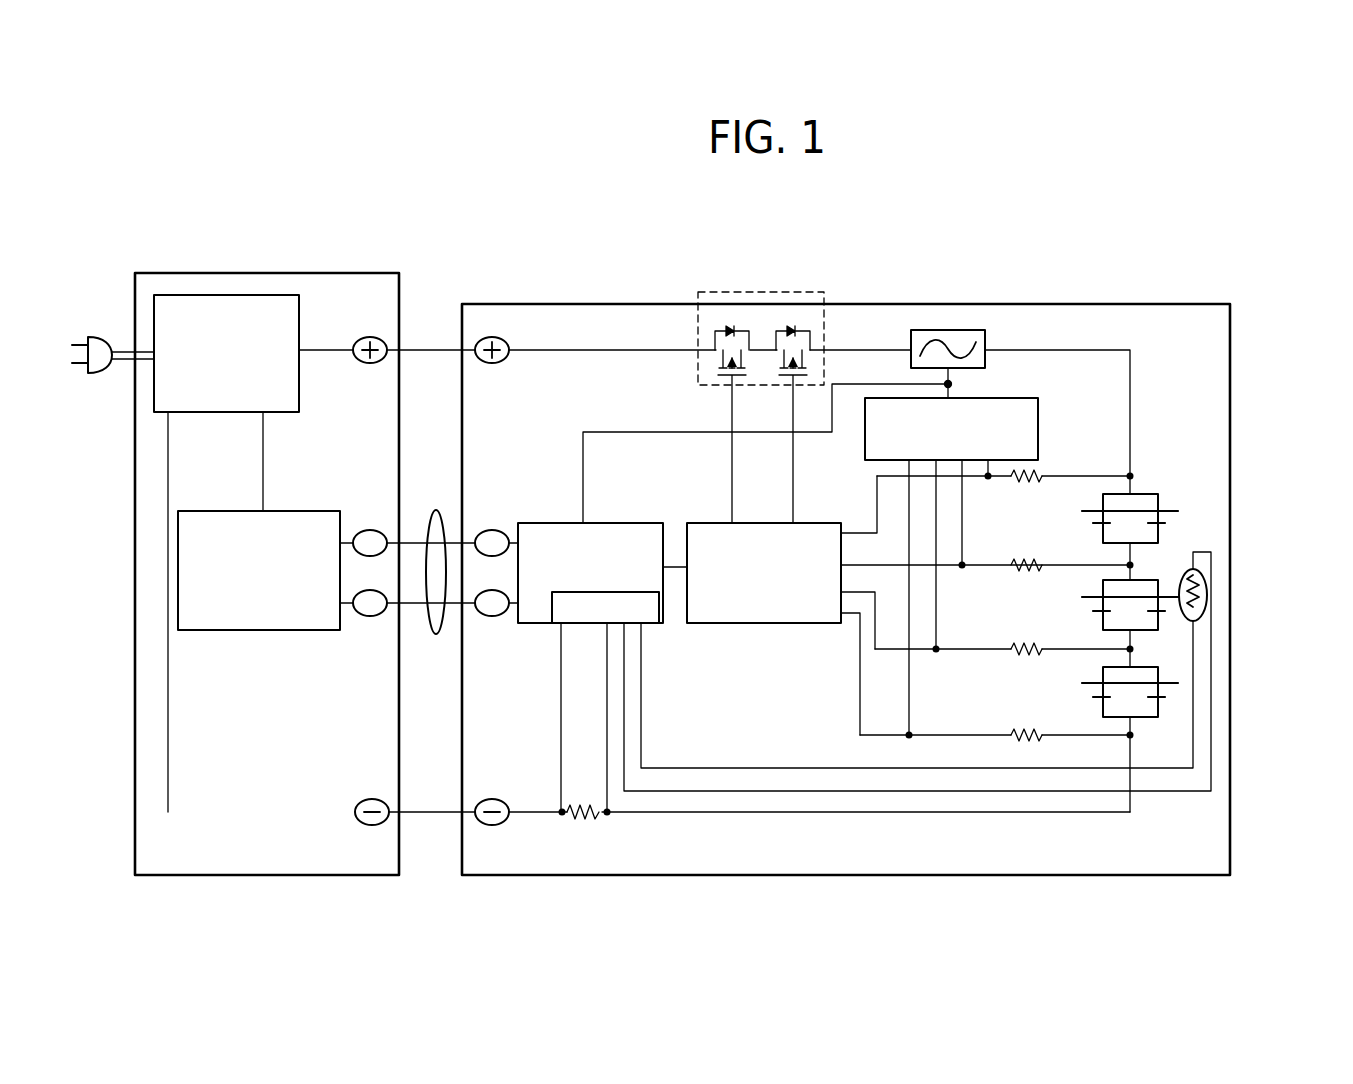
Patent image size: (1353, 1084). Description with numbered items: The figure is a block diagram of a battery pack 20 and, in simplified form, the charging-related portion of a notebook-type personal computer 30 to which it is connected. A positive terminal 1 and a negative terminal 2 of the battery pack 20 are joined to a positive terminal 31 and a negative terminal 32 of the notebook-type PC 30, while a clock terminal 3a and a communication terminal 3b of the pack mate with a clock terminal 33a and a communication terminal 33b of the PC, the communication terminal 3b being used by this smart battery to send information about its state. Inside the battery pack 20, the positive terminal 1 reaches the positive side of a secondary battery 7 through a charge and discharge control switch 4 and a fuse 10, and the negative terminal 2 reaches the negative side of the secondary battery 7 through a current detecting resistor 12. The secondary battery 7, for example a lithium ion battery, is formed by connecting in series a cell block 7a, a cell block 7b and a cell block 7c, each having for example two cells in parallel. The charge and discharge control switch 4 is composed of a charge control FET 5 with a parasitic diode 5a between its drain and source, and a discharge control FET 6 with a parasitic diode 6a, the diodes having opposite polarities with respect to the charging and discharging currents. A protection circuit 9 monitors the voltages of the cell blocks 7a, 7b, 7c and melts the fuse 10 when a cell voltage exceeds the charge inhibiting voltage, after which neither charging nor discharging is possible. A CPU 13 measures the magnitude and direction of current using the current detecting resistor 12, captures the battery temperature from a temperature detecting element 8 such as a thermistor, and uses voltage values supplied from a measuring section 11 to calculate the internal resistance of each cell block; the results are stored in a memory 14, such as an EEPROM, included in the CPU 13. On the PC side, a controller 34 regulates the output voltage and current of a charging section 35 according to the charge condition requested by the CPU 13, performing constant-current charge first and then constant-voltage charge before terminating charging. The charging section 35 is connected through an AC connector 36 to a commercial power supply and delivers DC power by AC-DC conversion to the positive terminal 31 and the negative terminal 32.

The positive terminal 1 is at (492, 365).
The negative terminal 2 is at (488, 799).
The clock terminal 3a is at (493, 530).
The communication terminal 3b is at (496, 617).
The charge and discharge control switch 4 is at (826, 292).
The charge control FET 5 is at (786, 389).
The parasitic diode 5a is at (791, 318).
The discharge control FET 6 is at (724, 389).
The parasitic diode 6a is at (731, 318).
The secondary battery 7 is at (1204, 636).
The cell block 7a is at (1160, 490).
The cell block 7b is at (1155, 575).
The cell block 7c is at (1165, 672).
The temperature detecting element 8 is at (1186, 612).
The protection circuit 9 is at (1040, 420).
The fuse 10 is at (986, 332).
The measuring section 11 is at (763, 625).
The current detecting resistor 12 is at (582, 805).
The CPU 13 is at (631, 521).
The memory 14 is at (583, 625).
The battery pack 20 is at (1150, 284).
The notebook-type personal computer 30 is at (332, 256).
The positive terminal 31 is at (370, 365).
The negative terminal 32 is at (368, 799).
The clock terminal 33a is at (363, 530).
The communication terminal 33b is at (366, 617).
The controller 34 is at (258, 632).
The charging section 35 is at (290, 414).
The AC connector 36 is at (95, 338).